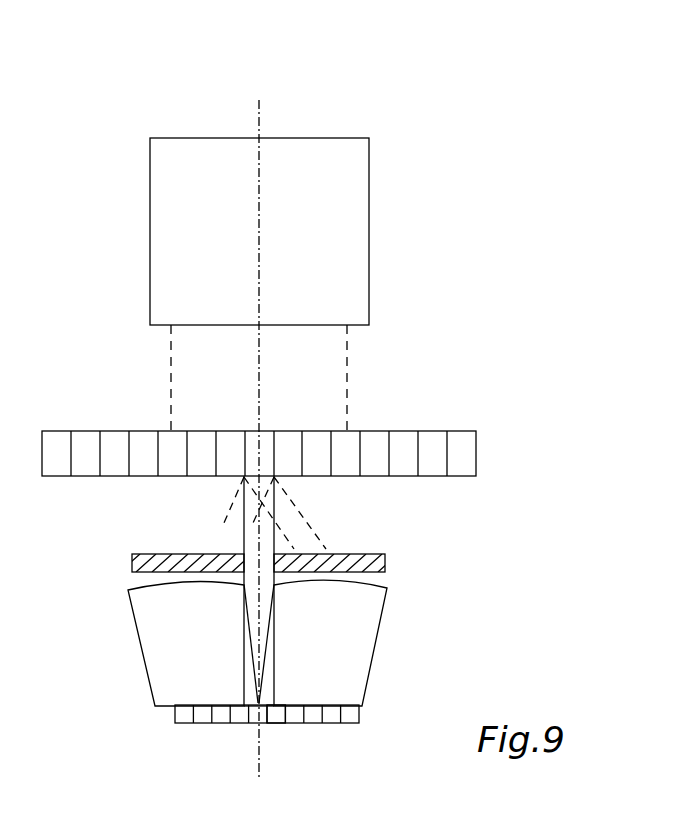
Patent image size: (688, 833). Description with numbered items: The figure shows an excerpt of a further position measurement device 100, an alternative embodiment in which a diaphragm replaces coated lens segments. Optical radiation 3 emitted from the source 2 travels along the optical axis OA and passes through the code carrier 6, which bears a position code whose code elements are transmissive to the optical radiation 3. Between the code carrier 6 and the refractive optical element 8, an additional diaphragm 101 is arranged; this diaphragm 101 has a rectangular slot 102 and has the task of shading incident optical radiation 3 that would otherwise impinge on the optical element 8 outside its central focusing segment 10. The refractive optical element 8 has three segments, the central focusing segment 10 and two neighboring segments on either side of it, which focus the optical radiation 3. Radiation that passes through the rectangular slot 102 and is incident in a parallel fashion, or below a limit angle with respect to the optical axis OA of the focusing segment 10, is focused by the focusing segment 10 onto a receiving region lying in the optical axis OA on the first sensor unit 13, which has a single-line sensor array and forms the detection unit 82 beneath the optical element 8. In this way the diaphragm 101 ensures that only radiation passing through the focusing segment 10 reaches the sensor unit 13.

The position measurement device 100 is at (430, 114).
The light source 2 is at (293, 137).
The optical axis OA is at (258, 120).
The optical radiation 3 is at (348, 390).
The code carrier 6 is at (478, 452).
The rectangular slot 102 is at (238, 553).
The diaphragm 101 is at (387, 561).
The refractive optical element 8 is at (376, 642).
The focusing segment 10 is at (251, 622).
The first sensor unit 13 is at (315, 724).
The detection unit 82 is at (276, 727).